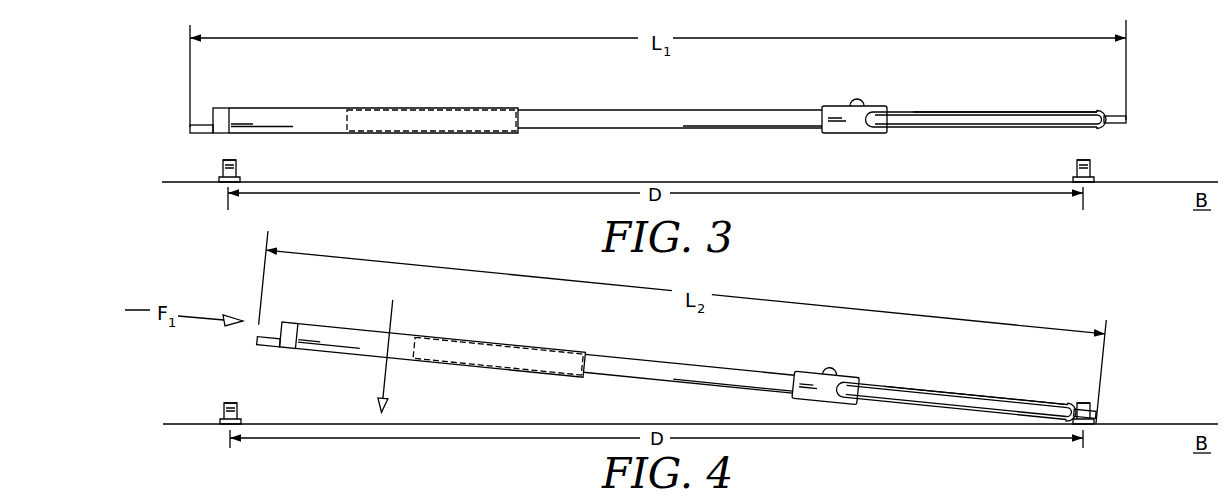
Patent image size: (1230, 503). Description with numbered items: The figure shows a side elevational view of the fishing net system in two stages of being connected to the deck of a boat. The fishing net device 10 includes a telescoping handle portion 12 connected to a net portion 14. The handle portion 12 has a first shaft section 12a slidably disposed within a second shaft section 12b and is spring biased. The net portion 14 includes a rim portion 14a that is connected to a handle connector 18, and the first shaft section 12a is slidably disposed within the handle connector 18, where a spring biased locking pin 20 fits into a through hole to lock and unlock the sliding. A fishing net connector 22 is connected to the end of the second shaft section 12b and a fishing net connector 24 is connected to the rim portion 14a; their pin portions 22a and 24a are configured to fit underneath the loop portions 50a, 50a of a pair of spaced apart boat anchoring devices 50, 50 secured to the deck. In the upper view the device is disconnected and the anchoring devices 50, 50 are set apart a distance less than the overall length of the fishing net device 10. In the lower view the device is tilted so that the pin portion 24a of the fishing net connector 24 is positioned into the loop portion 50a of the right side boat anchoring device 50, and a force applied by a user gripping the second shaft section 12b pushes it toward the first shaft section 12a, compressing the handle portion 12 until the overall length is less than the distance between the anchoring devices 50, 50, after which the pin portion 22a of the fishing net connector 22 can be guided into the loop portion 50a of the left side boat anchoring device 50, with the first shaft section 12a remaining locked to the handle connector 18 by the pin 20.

In FIG. 3, the fishing net device 10 is at (146, 84).
In FIG. 4, the fishing net device 10 is at (251, 296).
In FIG. 3, the handle portion 12 is at (290, 104).
In FIG. 4, the handle portion 12 is at (356, 325).
In FIG. 3, the first shaft section 12a is at (576, 120).
In FIG. 4, the first shaft section 12a is at (618, 366).
In FIG. 3, the second shaft section 12b is at (374, 106).
In FIG. 4, the second shaft section 12b is at (442, 337).
In FIG. 3, the net portion 14 is at (939, 131).
In FIG. 4, the net portion 14 is at (919, 385).
In FIG. 3, the rim portion 14a is at (1007, 119).
In FIG. 4, the rim portion 14a is at (1002, 397).
In FIG. 3, the handle connector 18 is at (838, 118).
In FIG. 4, the handle connector 18 is at (805, 378).
In FIG. 3, the locking pin 20 is at (856, 103).
In FIG. 4, the locking pin 20 is at (830, 366).
In FIG. 3, the fishing net connector 22 is at (222, 135).
In FIG. 4, the fishing net connector 22 is at (292, 352).
In FIG. 3, the pin portion 22a is at (190, 127).
In FIG. 4, the pin portion 22a is at (258, 343).
In FIG. 3, the fishing net connector 24 is at (1092, 112).
In FIG. 4, the fishing net connector 24 is at (1060, 402).
In FIG. 3, the pin portion 24a is at (1128, 118).
In FIG. 4, the pin portion 24a is at (1098, 414).
In FIG. 3, the boat anchoring device 50 is at (248, 176).
In FIG. 4, the boat anchoring device 50 is at (248, 418).
In FIG. 3, the loop portion 50a is at (242, 162).
In FIG. 4, the loop portion 50a is at (242, 403).